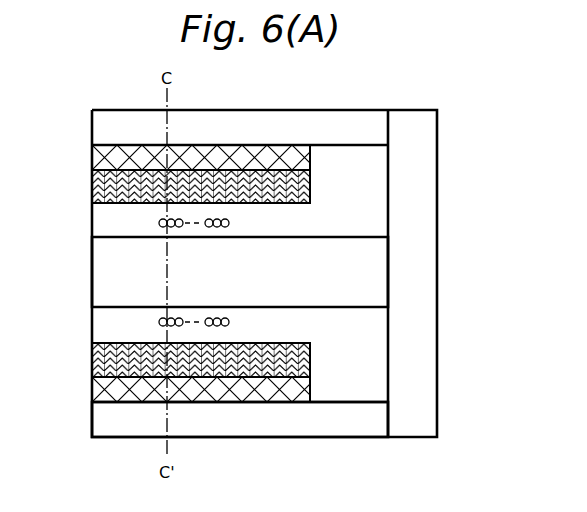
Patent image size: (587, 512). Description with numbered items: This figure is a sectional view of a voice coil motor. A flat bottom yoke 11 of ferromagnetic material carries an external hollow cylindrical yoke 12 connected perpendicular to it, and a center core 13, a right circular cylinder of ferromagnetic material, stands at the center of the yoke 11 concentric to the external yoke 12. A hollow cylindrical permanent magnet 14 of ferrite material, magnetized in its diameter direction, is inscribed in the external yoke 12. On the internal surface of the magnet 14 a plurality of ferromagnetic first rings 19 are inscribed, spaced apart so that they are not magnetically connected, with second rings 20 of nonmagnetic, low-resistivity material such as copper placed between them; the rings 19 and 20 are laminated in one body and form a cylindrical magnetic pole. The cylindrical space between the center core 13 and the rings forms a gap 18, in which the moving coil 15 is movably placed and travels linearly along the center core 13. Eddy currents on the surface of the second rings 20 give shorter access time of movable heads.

The flat bottom yoke 11 is at (428, 271).
The external hollow cylindrical yoke 12 is at (303, 430).
The center core 13 is at (106, 278).
The permanent magnet 14 is at (100, 160).
The moving coil 15 is at (167, 320).
The gap 18 is at (105, 223).
The ferromagnetic rings 19 is at (118, 194).
The second rings 20 is at (236, 203).